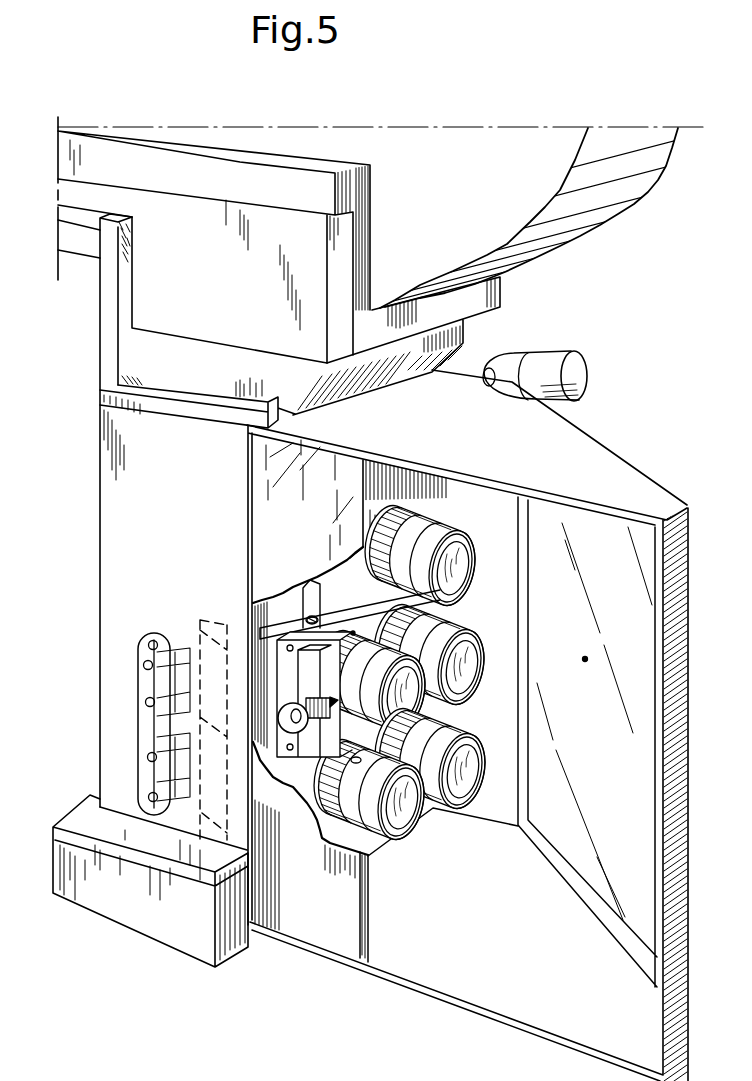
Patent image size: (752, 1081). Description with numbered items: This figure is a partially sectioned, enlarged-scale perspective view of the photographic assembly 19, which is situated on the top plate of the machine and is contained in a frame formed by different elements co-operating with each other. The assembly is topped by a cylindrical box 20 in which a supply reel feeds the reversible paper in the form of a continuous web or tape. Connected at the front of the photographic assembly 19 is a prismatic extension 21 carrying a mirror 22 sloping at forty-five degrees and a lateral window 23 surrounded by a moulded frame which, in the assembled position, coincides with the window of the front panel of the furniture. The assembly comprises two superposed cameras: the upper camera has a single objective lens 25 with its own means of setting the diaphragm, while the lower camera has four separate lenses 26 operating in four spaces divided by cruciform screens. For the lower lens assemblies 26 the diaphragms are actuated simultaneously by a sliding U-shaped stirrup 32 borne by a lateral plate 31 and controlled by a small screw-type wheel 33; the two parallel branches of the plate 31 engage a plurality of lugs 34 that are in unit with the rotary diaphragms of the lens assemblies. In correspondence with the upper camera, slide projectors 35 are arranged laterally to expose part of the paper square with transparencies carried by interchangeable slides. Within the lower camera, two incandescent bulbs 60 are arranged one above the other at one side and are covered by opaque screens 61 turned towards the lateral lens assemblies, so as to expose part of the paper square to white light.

The photographic assembly 19 is at (95, 557).
The cylindrical box 20 is at (562, 228).
The prismatic extension 21 is at (638, 454).
The mirror 22 is at (587, 742).
The lateral window 23 is at (369, 906).
The single objective lens 25 is at (468, 526).
The four separate lenses 26 is at (482, 735).
The lateral plate 31 is at (317, 590).
The sliding U-shaped stirrup 32 is at (305, 667).
The small screw-type wheel 33 is at (281, 758).
The lugs 34 is at (353, 633).
The slide projectors 35 is at (543, 344).
The incandescent bulbs 60 is at (193, 634).
The opaque screens 61 is at (212, 607).